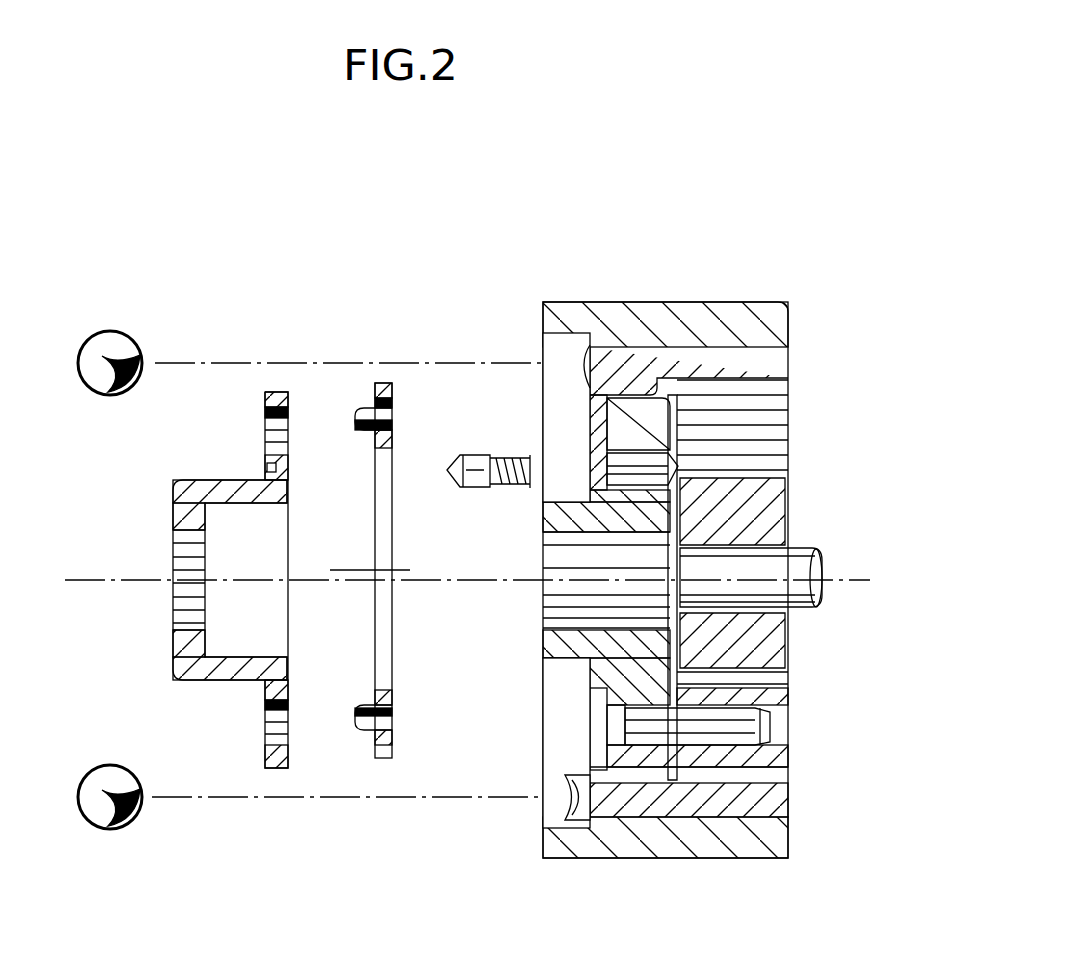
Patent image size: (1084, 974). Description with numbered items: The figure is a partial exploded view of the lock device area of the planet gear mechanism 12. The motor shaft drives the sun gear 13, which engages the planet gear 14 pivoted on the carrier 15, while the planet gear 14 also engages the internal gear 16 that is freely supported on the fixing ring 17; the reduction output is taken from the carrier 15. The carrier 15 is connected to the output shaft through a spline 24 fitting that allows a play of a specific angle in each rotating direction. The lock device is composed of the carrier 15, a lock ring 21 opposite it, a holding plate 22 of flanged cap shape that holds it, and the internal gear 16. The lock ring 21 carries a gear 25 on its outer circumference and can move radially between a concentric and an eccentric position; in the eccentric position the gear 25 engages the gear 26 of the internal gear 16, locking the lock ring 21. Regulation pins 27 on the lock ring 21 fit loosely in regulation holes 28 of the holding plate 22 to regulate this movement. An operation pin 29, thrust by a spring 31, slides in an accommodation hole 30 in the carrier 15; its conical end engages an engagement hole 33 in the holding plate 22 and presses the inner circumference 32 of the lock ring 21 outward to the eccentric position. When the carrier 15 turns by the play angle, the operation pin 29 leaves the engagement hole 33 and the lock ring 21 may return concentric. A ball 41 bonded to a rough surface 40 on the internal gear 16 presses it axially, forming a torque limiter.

The planet gear mechanism 12 is at (699, 288).
The sun gear 13 is at (762, 516).
The planet gear 14 is at (770, 757).
The carrier 15 is at (575, 652).
The internal gear 16 is at (770, 798).
The fixing ring 17 is at (740, 848).
The lock ring 21 is at (405, 398).
The holding plate 22 is at (182, 665).
The spline 24 is at (555, 610).
The gear 25 is at (380, 385).
The gear 26 is at (578, 395).
The regulation pins 27 is at (368, 418).
The regulation holes 28 is at (272, 428).
The operation pin 29 is at (472, 452).
The accommodation hole 30 is at (675, 462).
The spring 31 is at (497, 490).
The inner circumference 32 is at (390, 678).
The engagement hole 33 is at (283, 468).
The rough surface 40 is at (543, 850).
The ball 41 is at (112, 330).